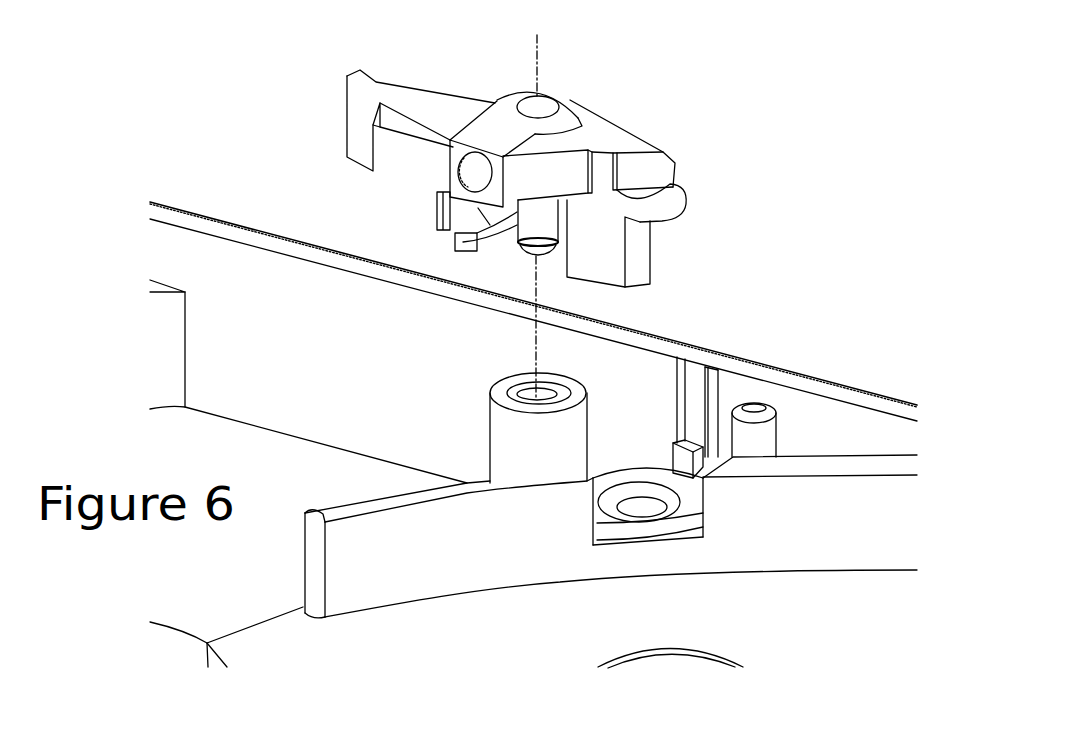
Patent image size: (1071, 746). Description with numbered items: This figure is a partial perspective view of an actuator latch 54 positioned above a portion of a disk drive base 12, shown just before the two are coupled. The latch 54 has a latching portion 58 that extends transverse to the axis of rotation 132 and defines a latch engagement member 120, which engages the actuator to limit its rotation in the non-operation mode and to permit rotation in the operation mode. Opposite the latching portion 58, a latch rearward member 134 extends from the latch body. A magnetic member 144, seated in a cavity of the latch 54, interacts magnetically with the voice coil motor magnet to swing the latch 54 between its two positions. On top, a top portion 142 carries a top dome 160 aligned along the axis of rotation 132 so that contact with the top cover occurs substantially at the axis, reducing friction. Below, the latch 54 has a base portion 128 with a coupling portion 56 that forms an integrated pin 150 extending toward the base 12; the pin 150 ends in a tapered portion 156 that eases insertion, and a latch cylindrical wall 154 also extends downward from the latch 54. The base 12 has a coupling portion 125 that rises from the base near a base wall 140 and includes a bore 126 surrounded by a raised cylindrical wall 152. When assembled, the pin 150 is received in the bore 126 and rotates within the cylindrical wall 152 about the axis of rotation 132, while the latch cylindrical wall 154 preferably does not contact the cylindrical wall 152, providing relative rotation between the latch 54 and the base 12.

The disk drive base 12 is at (339, 485).
The latch 54 is at (669, 131).
The coupling portion 56 is at (497, 258).
The latching portion 58 is at (437, 78).
The latch engagement member 120 is at (358, 80).
The coupling portion 125 is at (477, 458).
The bore 126 is at (490, 388).
The base portion 128 is at (568, 287).
The axis of rotation 132 is at (542, 63).
The latch rearward member 134 is at (675, 237).
The base wall 140 is at (312, 390).
The top portion 142 is at (525, 81).
The magnetic member 144 is at (468, 171).
The pin 150 is at (550, 282).
The raised cylindrical wall 152 is at (527, 450).
The latch cylindrical wall 154 is at (455, 238).
The tapered portion 156 is at (528, 255).
The top dome 160 is at (543, 100).